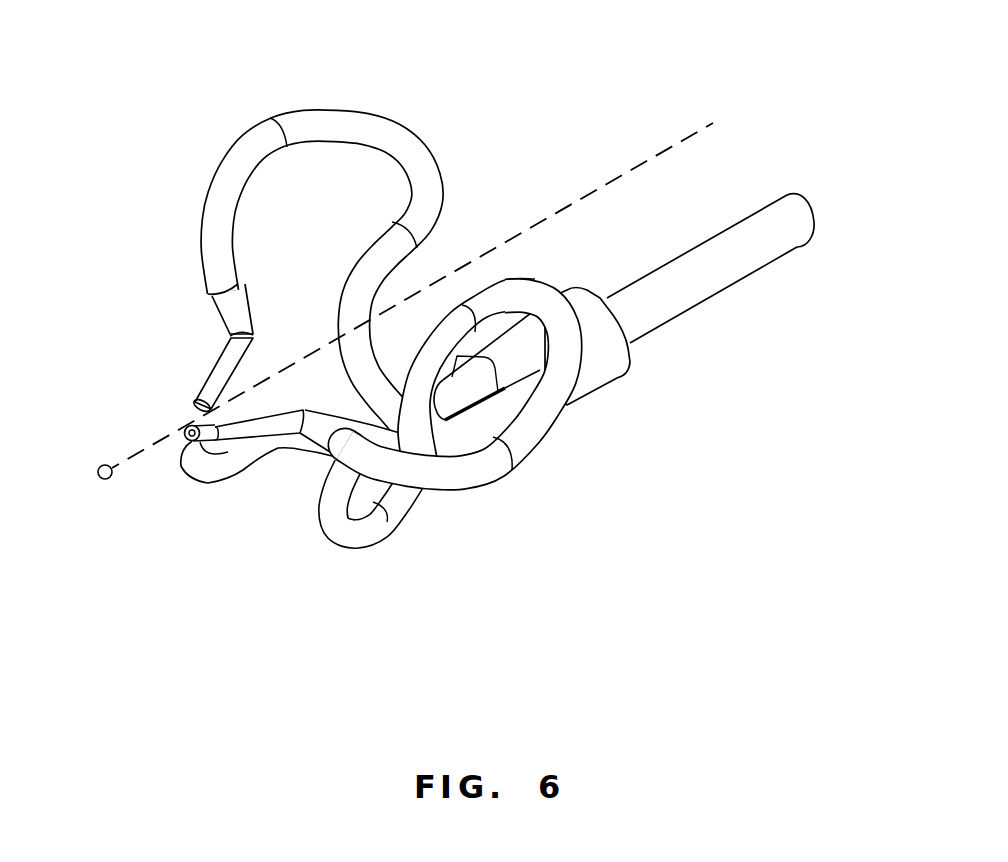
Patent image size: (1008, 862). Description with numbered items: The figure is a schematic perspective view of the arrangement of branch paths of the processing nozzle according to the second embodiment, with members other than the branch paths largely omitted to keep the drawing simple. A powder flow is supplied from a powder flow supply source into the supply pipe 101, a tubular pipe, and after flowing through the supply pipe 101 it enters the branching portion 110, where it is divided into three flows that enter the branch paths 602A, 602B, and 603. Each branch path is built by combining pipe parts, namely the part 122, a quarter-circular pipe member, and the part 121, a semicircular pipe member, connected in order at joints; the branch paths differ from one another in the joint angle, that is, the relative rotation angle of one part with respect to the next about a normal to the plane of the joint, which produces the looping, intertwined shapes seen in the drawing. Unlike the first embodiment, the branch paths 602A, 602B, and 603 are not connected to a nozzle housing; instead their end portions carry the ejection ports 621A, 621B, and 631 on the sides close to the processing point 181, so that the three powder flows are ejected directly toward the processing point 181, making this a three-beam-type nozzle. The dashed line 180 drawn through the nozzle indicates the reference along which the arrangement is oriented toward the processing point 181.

The supply pipe 101 is at (747, 279).
The branching portion 110 is at (604, 387).
The semicircular pipe member 121 is at (307, 127).
The quarter-circular pipe member 122 is at (258, 133).
The axis line 180 is at (644, 160).
The processing point 181 is at (108, 479).
The branch path 602A is at (236, 58).
The branch path 602B is at (593, 572).
The branch path 603 is at (422, 628).
The ejection port 621A is at (213, 375).
The ejection port 621B is at (250, 445).
The ejection port 631 is at (204, 455).